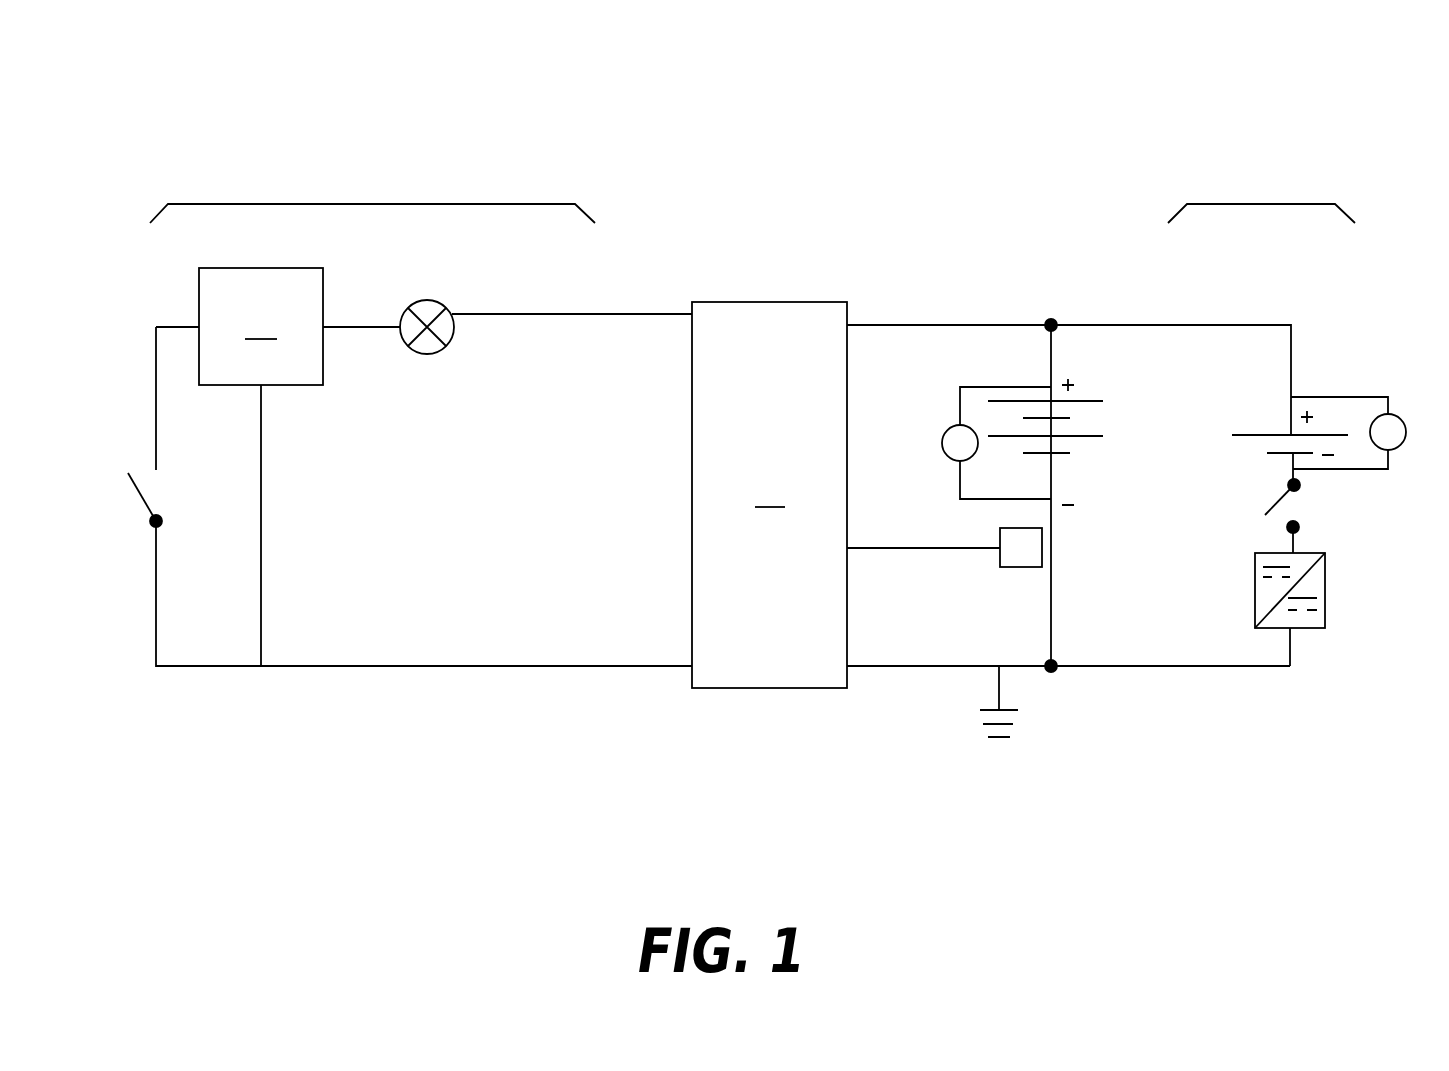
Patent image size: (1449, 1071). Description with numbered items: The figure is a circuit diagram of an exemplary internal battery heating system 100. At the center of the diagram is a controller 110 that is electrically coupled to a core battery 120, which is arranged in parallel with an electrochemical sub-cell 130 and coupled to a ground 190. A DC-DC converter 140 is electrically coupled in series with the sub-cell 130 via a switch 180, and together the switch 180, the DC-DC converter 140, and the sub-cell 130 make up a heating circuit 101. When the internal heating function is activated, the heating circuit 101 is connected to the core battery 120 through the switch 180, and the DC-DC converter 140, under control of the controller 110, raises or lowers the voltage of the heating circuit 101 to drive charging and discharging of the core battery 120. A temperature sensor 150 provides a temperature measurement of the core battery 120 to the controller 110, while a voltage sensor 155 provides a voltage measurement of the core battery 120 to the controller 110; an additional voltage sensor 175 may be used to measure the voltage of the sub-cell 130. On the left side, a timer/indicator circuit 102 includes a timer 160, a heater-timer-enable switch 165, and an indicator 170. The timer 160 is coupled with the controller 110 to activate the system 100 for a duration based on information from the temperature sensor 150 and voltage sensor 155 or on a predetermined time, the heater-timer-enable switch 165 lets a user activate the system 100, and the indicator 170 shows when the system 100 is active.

The internal battery heating system 100 is at (202, 136).
The heating circuit 101 is at (1267, 203).
The timer/indicator circuit 102 is at (357, 203).
The controller 110 is at (769, 495).
The core battery 120 is at (1122, 460).
The electrochemical sub-cell 130 is at (1275, 395).
The DC-DC converter 140 is at (1325, 590).
The temperature sensor 150 is at (1025, 567).
The voltage sensor 155 is at (942, 443).
The timer 160 is at (261, 326).
The heater-timer-enable switch 165 is at (136, 520).
The indicator 170 is at (428, 298).
The additional voltage sensor 175 is at (1388, 413).
The switch 180 is at (1283, 492).
The ground 190 is at (966, 723).